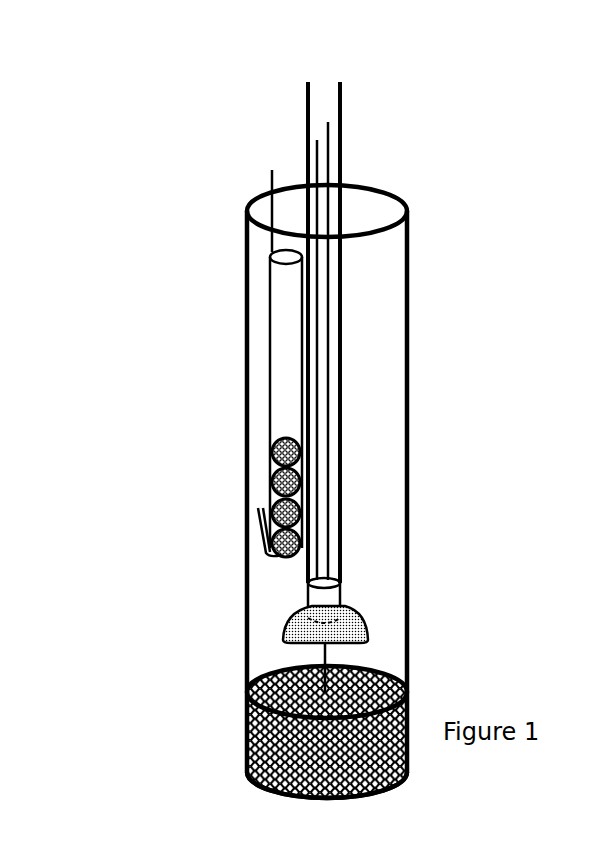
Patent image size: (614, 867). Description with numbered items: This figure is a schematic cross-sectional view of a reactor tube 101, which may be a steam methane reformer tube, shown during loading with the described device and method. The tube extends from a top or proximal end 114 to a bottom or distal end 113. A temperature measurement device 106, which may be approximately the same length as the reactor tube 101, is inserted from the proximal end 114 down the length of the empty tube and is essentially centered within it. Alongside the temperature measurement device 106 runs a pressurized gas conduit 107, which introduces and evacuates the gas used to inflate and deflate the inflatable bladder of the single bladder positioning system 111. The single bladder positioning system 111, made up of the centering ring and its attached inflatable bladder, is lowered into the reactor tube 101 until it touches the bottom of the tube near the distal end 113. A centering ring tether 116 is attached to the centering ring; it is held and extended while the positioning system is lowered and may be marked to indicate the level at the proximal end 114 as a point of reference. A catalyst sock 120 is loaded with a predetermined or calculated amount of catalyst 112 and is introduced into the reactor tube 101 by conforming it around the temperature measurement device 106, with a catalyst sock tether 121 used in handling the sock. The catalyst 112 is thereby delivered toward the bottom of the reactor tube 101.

The steam methane reformer tube 101 is at (412, 582).
The temperature measurement device 106 is at (318, 127).
The pressurized gas conduit 107 is at (306, 148).
The single bladder positioning system 111 is at (283, 607).
The catalyst 112 is at (276, 469).
The bottom (distal end) of the reactor tube 113 is at (244, 783).
The top (proximal end) of the reactor tube 114 is at (236, 208).
The centering ring tether 116 is at (315, 91).
The catalyst sock 120 is at (286, 330).
The catalyst sock tether 121 is at (270, 198).